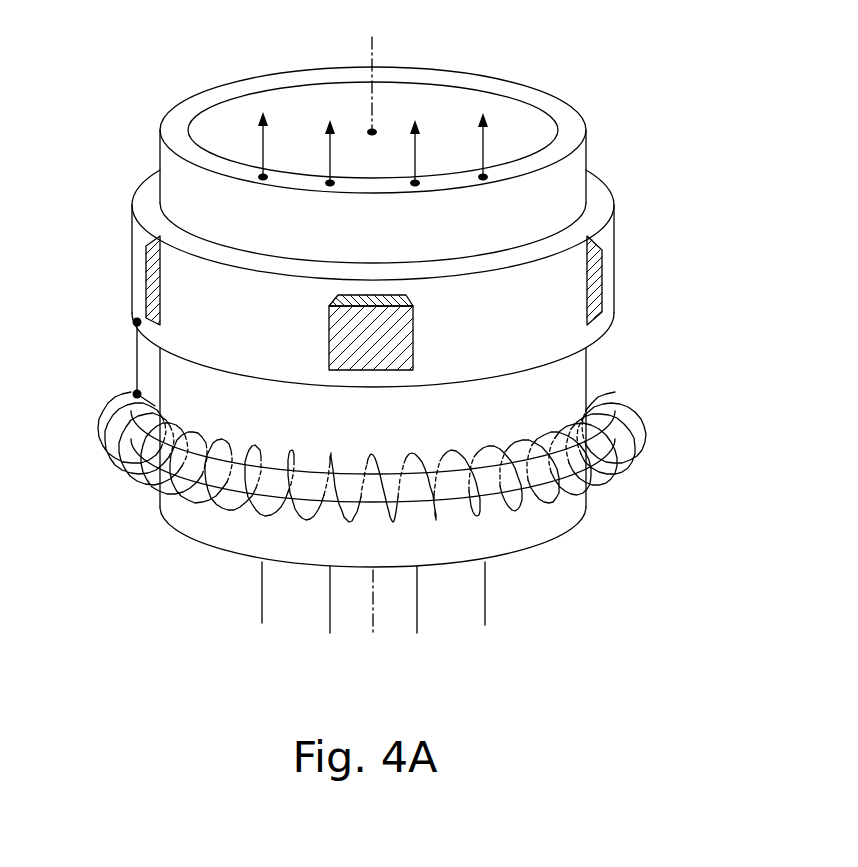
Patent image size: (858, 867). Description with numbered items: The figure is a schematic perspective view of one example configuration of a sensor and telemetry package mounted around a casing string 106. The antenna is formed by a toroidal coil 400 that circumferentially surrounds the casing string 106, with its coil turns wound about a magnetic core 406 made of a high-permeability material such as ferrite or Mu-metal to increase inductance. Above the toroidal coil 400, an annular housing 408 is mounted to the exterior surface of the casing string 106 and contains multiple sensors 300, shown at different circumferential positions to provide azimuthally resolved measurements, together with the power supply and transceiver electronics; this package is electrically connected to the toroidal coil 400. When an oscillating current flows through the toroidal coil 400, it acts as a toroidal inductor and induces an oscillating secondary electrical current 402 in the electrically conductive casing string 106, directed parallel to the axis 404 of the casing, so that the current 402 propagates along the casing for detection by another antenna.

The casing string 106 is at (571, 122).
The sensor 300 is at (413, 347).
The toroidal coil 400 is at (640, 428).
The oscillating secondary electrical current 402 is at (261, 138).
The axis of the casing 404 is at (373, 55).
The magnetic core 406 is at (490, 495).
The annular housing 408 is at (130, 240).